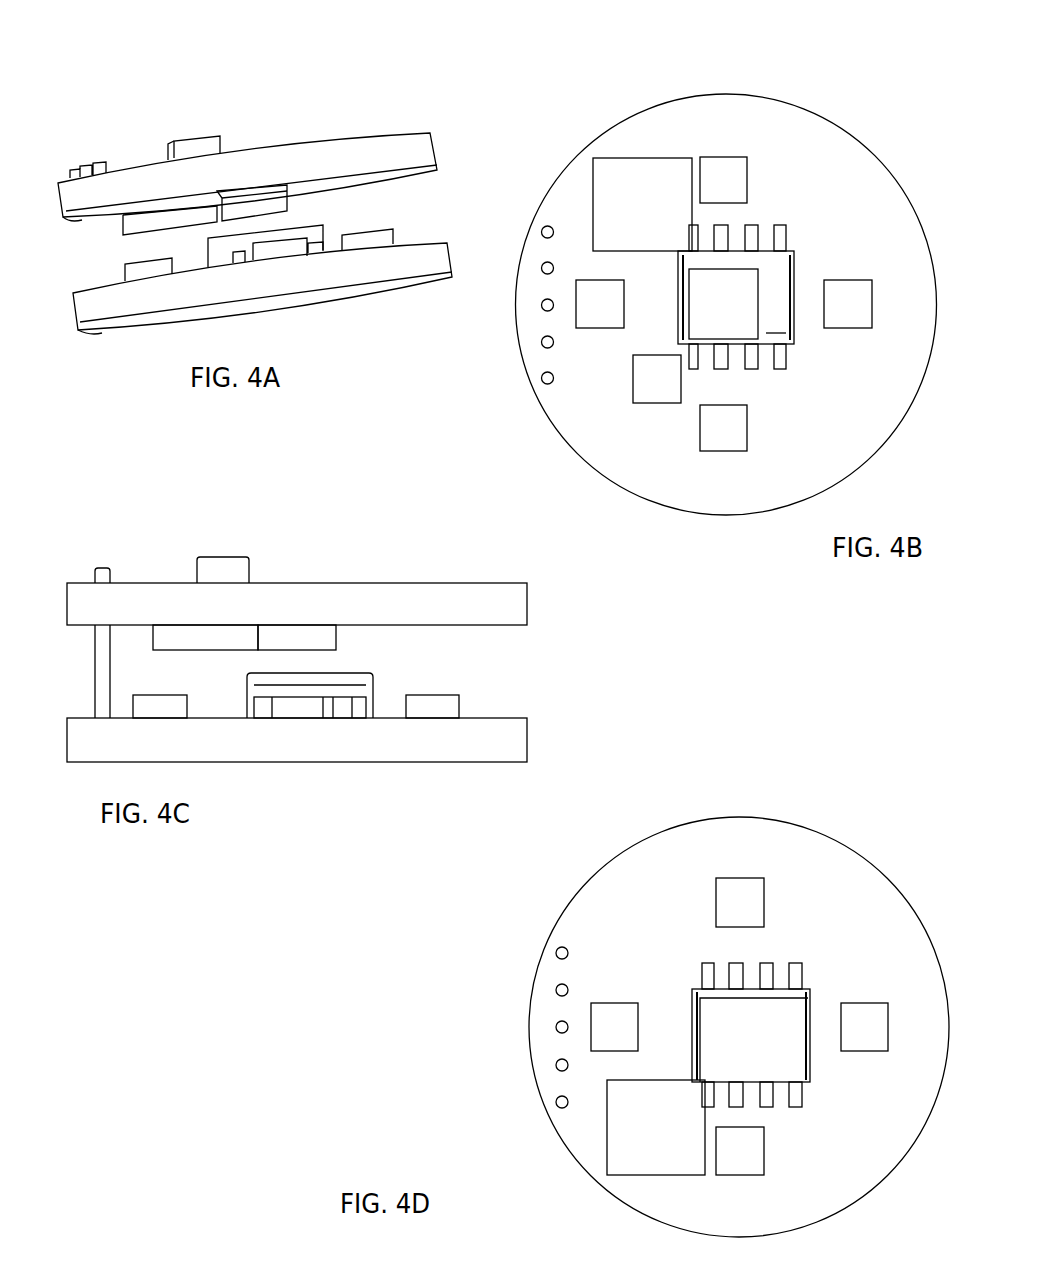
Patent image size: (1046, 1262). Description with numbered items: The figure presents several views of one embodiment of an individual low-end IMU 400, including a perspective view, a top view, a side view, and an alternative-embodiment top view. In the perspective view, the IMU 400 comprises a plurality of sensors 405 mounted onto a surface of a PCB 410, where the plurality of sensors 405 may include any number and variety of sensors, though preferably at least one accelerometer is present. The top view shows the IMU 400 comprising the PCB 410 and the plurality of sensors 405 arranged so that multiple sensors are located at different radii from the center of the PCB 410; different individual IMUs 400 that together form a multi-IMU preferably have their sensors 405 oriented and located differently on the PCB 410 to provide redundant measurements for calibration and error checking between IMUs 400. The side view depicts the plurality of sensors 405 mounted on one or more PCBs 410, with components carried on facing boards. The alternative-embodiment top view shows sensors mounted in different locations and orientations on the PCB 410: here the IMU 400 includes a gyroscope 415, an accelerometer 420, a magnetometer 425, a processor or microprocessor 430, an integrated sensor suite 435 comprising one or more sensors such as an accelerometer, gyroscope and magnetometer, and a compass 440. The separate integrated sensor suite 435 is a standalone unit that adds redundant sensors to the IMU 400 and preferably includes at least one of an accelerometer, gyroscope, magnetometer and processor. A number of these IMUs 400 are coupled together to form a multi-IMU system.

In FIG. 4A, the individual low-end IMU 400 is at (133, 130).
In FIG. 4B, the individual low-end IMU 400 is at (593, 108).
In FIG. 4C, the individual low-end IMU 400 is at (145, 557).
In FIG. 4D, the individual low-end IMU 400 is at (735, 795).
In FIG. 4A, the plurality of sensors 405 is at (357, 210).
In FIG. 4B, the plurality of sensors 405 is at (787, 210).
In FIG. 4C, the plurality of sensors 405 is at (362, 659).
In FIG. 4A, the PCB 410 is at (97, 190).
In FIG. 4B, the PCB 410 is at (617, 435).
In FIG. 4C, the PCB 410 is at (433, 609).
In FIG. 4D, the PCB 410 is at (588, 902).
In FIG. 4D, the gyroscope 415 is at (734, 892).
In FIG. 4D, the accelerometer 420 is at (622, 1155).
In FIG. 4D, the magnetometer 425 is at (868, 1037).
In FIG. 4D, the processor or microprocessor 430 is at (603, 1027).
In FIG. 4D, the integrated sensor suite 435 is at (796, 1027).
In FIG. 4D, the compass 440 is at (727, 1161).